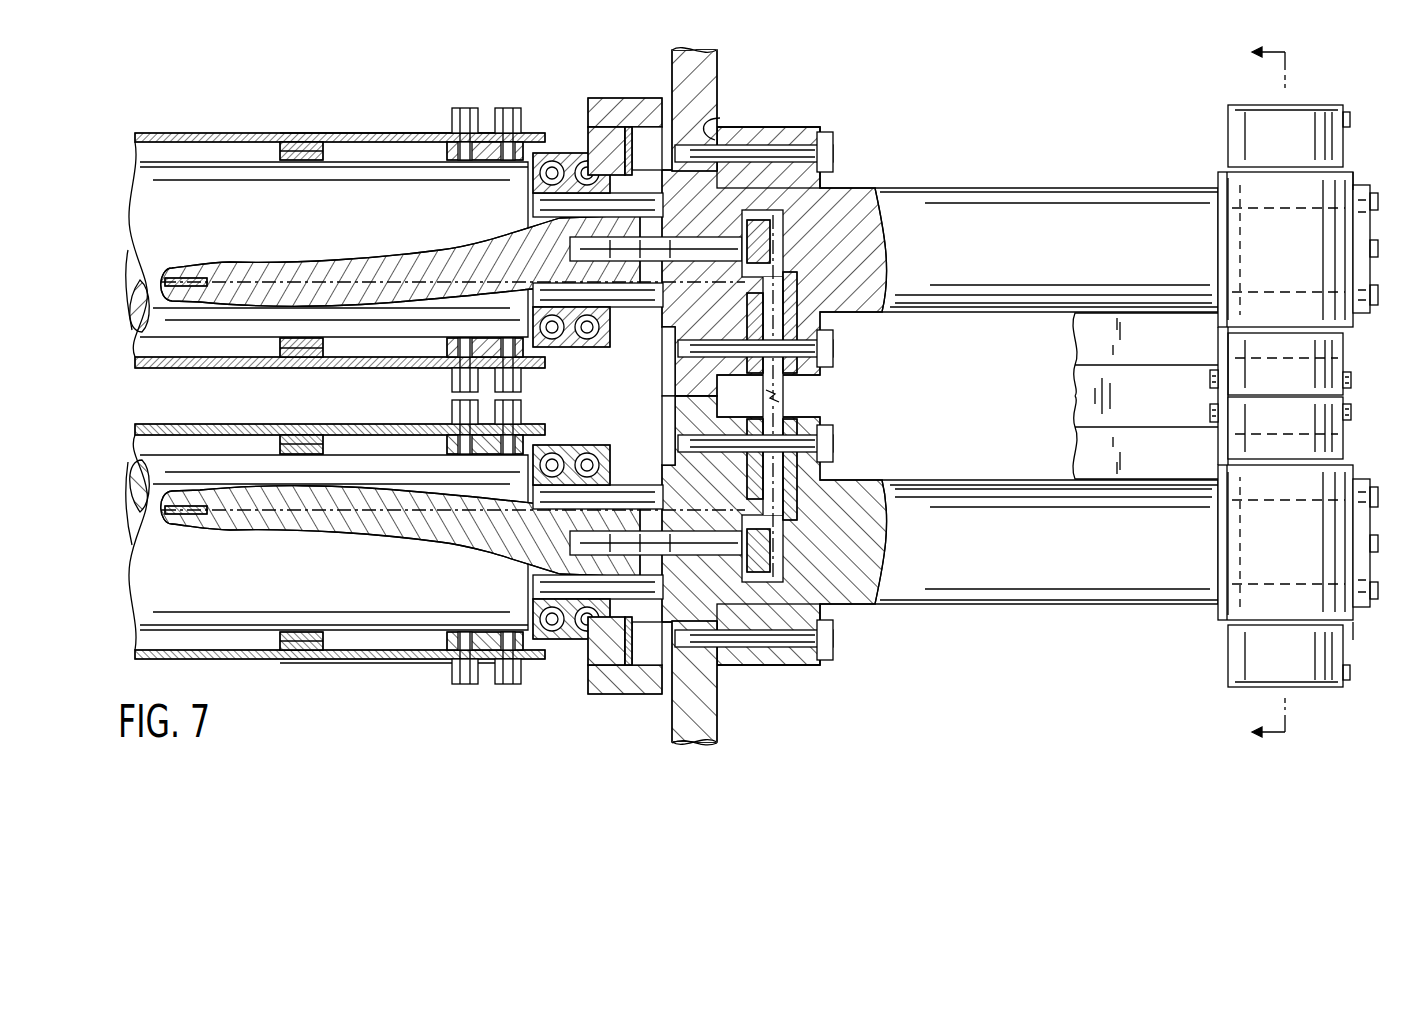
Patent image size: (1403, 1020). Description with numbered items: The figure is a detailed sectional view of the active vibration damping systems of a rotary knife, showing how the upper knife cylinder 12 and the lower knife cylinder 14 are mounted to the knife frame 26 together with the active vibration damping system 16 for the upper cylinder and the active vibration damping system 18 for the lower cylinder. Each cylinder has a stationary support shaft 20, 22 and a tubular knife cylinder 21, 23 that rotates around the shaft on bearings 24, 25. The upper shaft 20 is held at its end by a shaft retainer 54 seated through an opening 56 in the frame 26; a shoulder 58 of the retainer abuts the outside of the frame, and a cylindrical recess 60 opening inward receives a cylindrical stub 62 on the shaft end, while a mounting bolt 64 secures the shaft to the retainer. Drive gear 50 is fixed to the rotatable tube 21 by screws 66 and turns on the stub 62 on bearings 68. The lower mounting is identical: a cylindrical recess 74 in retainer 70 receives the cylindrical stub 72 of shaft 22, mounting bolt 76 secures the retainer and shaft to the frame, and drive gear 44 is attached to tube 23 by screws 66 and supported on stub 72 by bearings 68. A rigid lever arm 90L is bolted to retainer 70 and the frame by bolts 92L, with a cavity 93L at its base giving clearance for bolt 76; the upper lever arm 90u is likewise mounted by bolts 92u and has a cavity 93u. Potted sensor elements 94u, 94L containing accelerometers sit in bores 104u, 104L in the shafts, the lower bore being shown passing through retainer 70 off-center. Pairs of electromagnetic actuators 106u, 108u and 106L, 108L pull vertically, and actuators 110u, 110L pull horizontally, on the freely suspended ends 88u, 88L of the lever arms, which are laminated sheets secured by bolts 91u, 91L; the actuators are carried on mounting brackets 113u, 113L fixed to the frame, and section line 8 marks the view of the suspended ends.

The section line 8— 8 is at (1268, 393).
The upper knife cylinder 12 is at (282, 133).
The lower knife cylinder 14 is at (235, 663).
The active vibration damping system 16 is at (1370, 173).
The active vibration damping system 18 is at (1360, 626).
The stationary support shaft 20 is at (200, 172).
The tubular knife cylinder 21 is at (338, 133).
The stationary support shaft 22 is at (160, 460).
The tubular knife cylinder 23 is at (337, 426).
The bearings 24 is at (298, 140).
The bearings 25 is at (282, 430).
The knife frame 26 is at (688, 52).
The drive gear 44 is at (610, 697).
The drive gear 50 is at (640, 100).
The shaft retainer 54 is at (758, 195).
The opening 56 is at (748, 178).
The shoulder 58 is at (716, 115).
The cylindrical recess 60 is at (600, 140).
The cylindrical stub 62 is at (548, 205).
The mounting bolt 64 is at (775, 240).
The screws 66 is at (508, 108).
The bearings 68 is at (587, 162).
The retainer 70 is at (725, 678).
The cylindrical stub 72 is at (545, 645).
The cylindrical recess 74 is at (640, 670).
The mounting bolt 76 is at (790, 570).
The freely suspended end 88u is at (1228, 178).
The freely suspended end 88L is at (1225, 622).
The lever arm 90u is at (950, 200).
The lever arm 90L is at (960, 592).
The bolt 91u is at (1372, 250).
The bolt 91L is at (1372, 545).
The bolts 92u is at (836, 150).
The bolts 92L is at (838, 447).
The cavity 93u is at (795, 265).
The cavity 93L is at (800, 568).
The potted sensor element 94u is at (165, 284).
The potted sensor element 94L is at (165, 510).
The bore 104u is at (250, 278).
The bore 104L is at (350, 515).
The electromagnetic actuator 106u is at (1298, 118).
The electromagnetic actuator 106L is at (1240, 405).
The electromagnetic actuator 108u is at (1240, 377).
The electromagnetic actuator 108L is at (1265, 685).
The electromagnetic actuator 110u is at (1230, 257).
The electromagnetic actuator 110L is at (1248, 490).
The actuator mounting bracket 113u is at (1090, 345).
The actuator mounting bracket 113L is at (1100, 448).